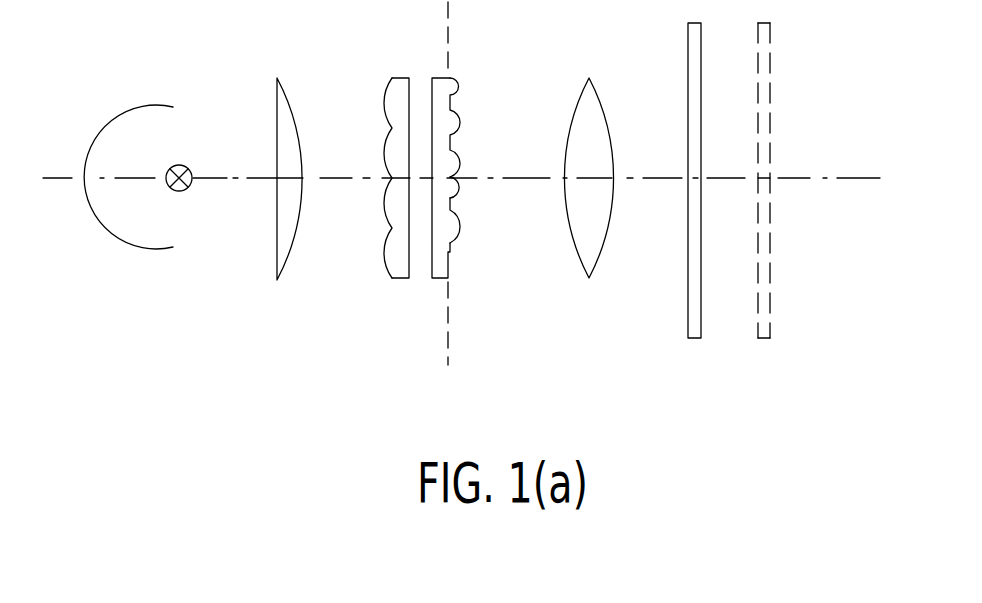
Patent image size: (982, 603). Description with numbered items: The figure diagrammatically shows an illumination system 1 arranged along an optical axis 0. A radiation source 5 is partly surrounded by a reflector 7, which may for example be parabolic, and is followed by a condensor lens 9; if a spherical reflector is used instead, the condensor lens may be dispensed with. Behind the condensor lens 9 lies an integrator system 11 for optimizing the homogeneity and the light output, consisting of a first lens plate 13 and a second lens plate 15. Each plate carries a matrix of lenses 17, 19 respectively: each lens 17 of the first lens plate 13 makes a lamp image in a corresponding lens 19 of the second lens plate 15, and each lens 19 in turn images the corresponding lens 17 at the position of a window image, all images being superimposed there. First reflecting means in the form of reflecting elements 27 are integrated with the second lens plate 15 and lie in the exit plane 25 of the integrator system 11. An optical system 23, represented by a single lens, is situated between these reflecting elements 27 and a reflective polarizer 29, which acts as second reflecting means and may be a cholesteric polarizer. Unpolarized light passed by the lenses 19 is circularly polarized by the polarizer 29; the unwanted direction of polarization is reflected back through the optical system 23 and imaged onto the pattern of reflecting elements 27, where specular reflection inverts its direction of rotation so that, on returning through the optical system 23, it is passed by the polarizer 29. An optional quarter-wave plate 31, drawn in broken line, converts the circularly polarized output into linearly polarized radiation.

The illumination system 1 is at (244, 423).
The optical axis 0 is at (58, 181).
The radiation source 5 is at (179, 191).
The parabolic reflector 7 is at (173, 248).
The condensor lens 9 is at (284, 256).
The integrator system 11 is at (409, 310).
The first lens plate 13 is at (399, 78).
The second lens plate 15 is at (452, 78).
The lenses of the first lens plate 17 is at (385, 150).
The lenses of the second lens plate 19 is at (459, 142).
The optical system 23 is at (592, 257).
The exit plane 25 is at (449, 343).
The reflecting elements 27 is at (460, 200).
The reflective polarizer 29 is at (688, 33).
The λ/4 plate 31 is at (770, 316).